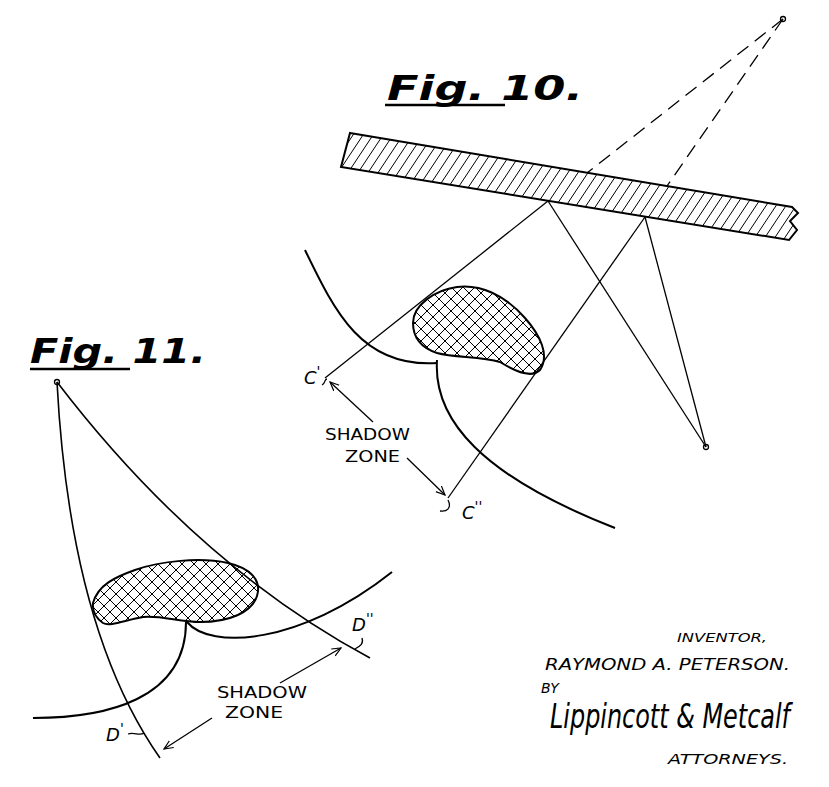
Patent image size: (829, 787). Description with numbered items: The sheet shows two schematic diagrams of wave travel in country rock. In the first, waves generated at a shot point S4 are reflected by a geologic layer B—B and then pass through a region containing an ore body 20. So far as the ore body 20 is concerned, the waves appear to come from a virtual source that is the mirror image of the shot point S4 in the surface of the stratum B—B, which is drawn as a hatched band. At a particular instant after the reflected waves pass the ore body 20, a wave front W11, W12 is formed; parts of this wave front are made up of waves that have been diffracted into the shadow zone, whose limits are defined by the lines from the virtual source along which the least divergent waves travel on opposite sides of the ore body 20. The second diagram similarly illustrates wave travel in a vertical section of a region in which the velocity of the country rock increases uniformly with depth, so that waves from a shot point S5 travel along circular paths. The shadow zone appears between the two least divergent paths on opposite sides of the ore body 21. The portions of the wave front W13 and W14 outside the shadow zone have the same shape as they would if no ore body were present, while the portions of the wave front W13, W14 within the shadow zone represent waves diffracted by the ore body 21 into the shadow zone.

In FIG. 10, the ore body 20 is at (497, 281).
In FIG. 11, the ore body 21 is at (145, 565).
In FIG. 10, the geologic layer B is at (347, 143).
In FIG. 10, the shot point S4 is at (780, 21).
In FIG. 10, the wave front W11 is at (370, 295).
In FIG. 10, the wave front W12 is at (536, 444).
In FIG. 11, the shot point S5 is at (60, 384).
In FIG. 11, the wave front W13 is at (45, 719).
In FIG. 11, the wave front W14 is at (345, 607).